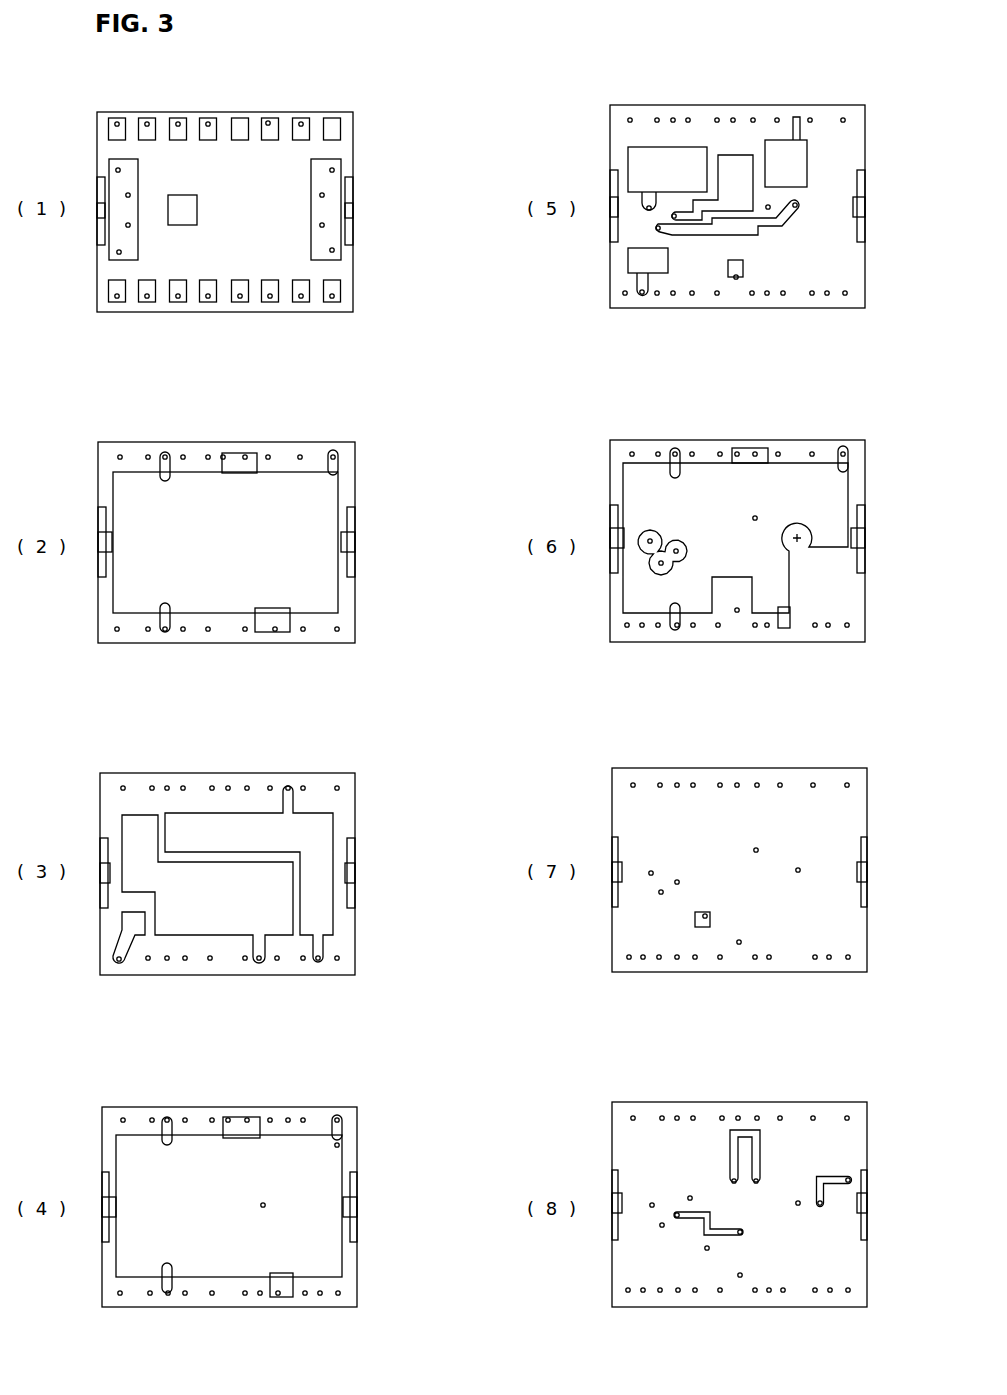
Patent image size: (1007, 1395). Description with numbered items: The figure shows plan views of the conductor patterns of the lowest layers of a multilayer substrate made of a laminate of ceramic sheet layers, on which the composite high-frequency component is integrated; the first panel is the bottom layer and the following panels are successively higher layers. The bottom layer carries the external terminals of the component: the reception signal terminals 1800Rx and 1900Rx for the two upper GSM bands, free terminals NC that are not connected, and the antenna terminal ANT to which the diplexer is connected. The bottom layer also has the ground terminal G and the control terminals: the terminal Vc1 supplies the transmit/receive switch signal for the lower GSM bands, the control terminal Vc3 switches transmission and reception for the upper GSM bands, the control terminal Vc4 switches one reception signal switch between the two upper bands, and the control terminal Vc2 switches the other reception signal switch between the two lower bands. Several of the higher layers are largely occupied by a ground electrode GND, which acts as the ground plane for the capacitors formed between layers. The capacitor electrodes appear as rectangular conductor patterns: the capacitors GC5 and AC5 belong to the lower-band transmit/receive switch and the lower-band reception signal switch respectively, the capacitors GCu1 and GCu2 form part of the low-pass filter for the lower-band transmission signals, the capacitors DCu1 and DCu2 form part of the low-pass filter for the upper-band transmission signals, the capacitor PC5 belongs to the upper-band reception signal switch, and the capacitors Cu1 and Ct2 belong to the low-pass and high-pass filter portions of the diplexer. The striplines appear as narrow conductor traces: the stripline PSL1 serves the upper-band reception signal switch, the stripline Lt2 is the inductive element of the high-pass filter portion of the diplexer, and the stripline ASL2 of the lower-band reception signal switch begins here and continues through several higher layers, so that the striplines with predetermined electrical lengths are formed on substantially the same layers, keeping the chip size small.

The GSM1800 reception signal terminal 1800Rx is at (143, 120).
The GSM1900 reception signal terminal 1900Rx is at (208, 120).
The free terminal NC is at (290, 114).
The control terminal Vc4 is at (147, 303).
The control terminal Vc3 is at (178, 303).
The terminal Vc1 is at (240, 303).
The ground terminal G is at (270, 303).
The control terminal Vc2 is at (301, 303).
The antenna terminal ANT is at (332, 303).
The ground electrode GND is at (242, 551).
The capacitor AC5 is at (805, 173).
The capacitor GC5 is at (241, 908).
The capacitor GCu2 is at (125, 923).
The capacitor PC5 is at (690, 181).
The capacitor Ct2 is at (712, 187).
The capacitor Cu1 is at (750, 236).
The capacitor GCu1 is at (662, 268).
The capacitor DCu1 is at (744, 270).
The capacitor DCu2 is at (711, 922).
The stripline PSL1 is at (761, 1147).
The stripline Lt2 is at (712, 1222).
The stripline ASL2 is at (830, 1190).